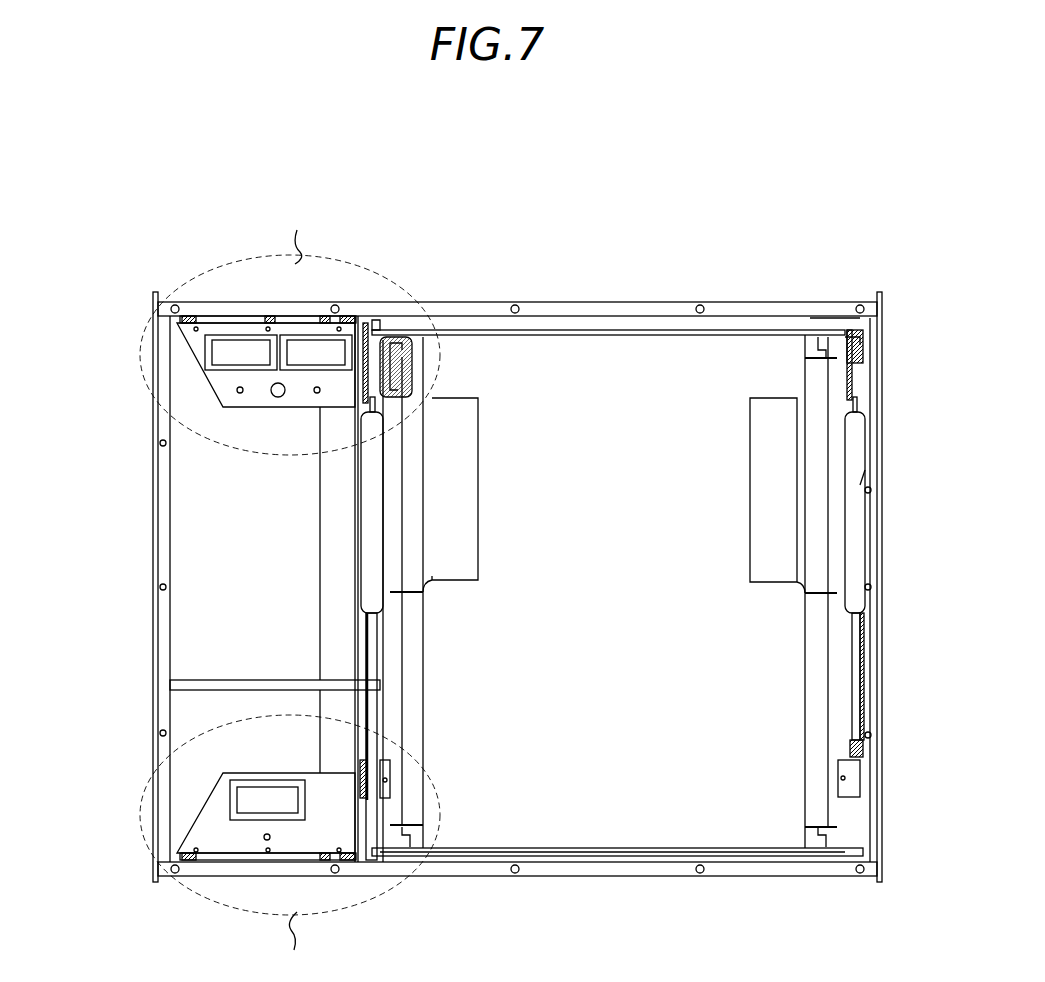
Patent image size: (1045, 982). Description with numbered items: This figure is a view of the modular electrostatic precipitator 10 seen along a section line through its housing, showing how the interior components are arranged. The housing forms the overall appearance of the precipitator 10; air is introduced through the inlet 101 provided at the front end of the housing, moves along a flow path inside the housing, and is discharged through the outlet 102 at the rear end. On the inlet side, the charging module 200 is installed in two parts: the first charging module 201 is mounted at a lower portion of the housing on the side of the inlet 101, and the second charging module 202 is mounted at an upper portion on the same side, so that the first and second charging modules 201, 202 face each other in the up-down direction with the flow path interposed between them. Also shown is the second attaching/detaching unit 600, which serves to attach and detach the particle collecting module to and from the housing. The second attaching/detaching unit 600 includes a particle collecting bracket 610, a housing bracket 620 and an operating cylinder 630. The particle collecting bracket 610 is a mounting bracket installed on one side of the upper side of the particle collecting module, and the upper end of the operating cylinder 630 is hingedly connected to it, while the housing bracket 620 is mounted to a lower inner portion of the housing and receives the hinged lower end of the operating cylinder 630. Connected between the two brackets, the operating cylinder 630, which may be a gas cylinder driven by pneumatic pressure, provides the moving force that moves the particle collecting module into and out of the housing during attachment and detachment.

The modular electrostatic precipitator 10 is at (568, 186).
The inlet 101 is at (155, 583).
The outlet 102 is at (882, 550).
The charging module 200 is at (197, 588).
The first charging module 201 is at (220, 800).
The second charging module 202 is at (225, 390).
The second attaching/detaching unit 600 is at (405, 245).
The particle collecting bracket 610 is at (402, 343).
The housing bracket 620 is at (363, 773).
The operating cylinder 630 is at (375, 460).